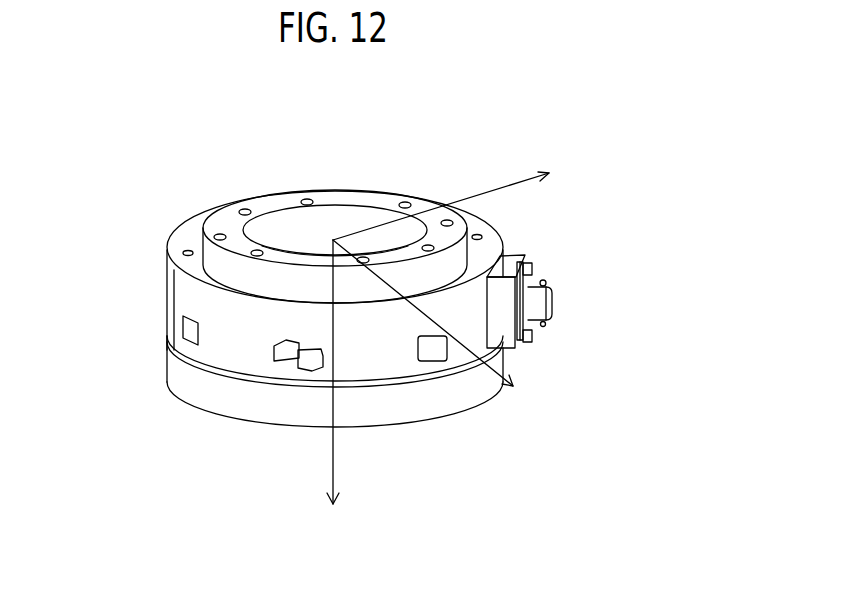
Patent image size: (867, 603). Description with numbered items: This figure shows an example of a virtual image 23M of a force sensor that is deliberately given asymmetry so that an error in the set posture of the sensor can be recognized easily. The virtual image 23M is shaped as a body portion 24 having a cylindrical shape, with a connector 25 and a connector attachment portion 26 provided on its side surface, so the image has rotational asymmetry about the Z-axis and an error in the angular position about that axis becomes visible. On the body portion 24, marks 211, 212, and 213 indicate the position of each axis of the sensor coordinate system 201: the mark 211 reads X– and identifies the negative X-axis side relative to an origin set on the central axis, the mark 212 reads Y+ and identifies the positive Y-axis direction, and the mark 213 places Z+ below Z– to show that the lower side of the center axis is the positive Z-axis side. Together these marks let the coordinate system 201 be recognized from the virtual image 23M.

The virtual image 23M is at (214, 184).
The coordinate system 201 is at (478, 168).
The mark 211 is at (183, 300).
The mark 212 is at (400, 362).
The mark 213 is at (280, 371).
The body portion 24 is at (168, 370).
The connector 25 is at (553, 303).
The connector attachment portion 26 is at (516, 251).